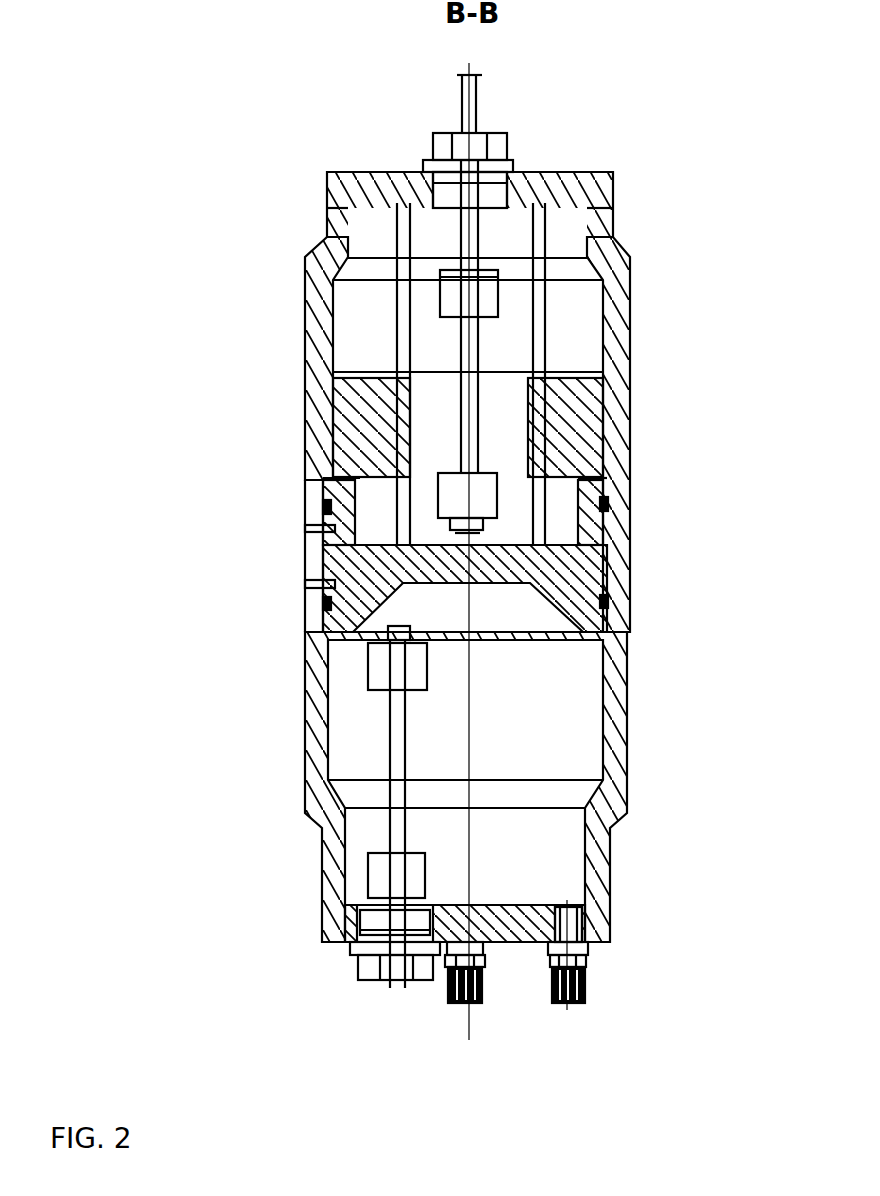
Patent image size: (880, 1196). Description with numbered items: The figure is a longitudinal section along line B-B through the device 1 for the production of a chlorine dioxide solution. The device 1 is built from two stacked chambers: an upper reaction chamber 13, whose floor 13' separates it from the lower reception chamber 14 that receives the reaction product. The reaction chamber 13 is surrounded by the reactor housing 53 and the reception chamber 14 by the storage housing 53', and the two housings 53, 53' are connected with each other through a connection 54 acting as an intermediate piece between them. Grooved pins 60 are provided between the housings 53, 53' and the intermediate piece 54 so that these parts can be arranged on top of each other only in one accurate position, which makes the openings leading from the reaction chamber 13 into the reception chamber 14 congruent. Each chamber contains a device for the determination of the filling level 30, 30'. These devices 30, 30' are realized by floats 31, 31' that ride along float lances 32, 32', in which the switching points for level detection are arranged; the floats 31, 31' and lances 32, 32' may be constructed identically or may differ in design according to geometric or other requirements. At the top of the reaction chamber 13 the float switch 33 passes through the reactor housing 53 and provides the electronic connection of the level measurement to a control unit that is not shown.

The device 1 is at (634, 383).
The reaction chamber 13 is at (542, 427).
The floor of the reaction chamber 13' is at (337, 537).
The reception chamber 14 is at (578, 728).
The device for the determination of the filling level 30 is at (340, 303).
The device for the determination of the filling level 30' is at (327, 670).
The float 31 is at (362, 503).
The float 31' is at (326, 885).
The float lance 32 is at (355, 316).
The float lance 32' is at (334, 807).
The float switch 33 is at (494, 148).
The reactor housing 53 is at (517, 197).
The storage housing 53' is at (530, 904).
The connection 54 is at (620, 544).
The grooved pin 60 is at (609, 504).